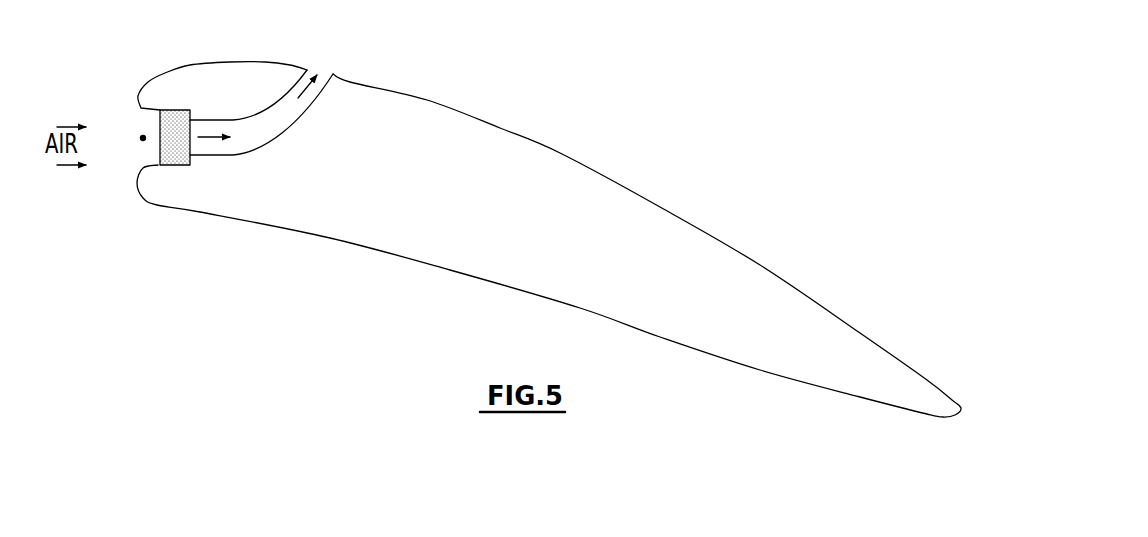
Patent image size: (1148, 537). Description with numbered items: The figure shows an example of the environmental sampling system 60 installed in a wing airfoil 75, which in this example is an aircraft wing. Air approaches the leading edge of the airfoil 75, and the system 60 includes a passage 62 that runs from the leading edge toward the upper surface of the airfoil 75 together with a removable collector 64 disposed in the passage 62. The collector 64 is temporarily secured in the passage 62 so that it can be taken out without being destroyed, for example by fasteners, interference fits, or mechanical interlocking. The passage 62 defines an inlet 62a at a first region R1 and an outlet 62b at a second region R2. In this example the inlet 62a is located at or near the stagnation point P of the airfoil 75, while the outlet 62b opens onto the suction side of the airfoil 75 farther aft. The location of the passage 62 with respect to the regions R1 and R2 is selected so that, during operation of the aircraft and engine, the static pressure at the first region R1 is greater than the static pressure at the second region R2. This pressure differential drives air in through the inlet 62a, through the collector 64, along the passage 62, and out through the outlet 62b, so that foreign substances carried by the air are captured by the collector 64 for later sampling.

The wing airfoil 75 is at (432, 100).
The environmental sampling system 60 is at (245, 95).
The passage 62 is at (263, 150).
The inlet 62a is at (141, 108).
The outlet 62b is at (328, 80).
The removable collector 64 is at (156, 153).
The stagnation point P is at (144, 135).
The first region R1 is at (123, 141).
The second region R2 is at (315, 70).